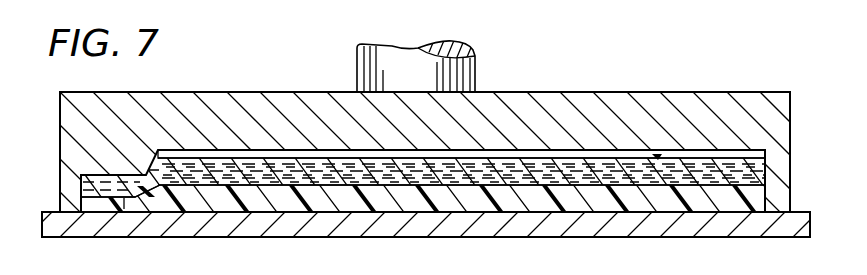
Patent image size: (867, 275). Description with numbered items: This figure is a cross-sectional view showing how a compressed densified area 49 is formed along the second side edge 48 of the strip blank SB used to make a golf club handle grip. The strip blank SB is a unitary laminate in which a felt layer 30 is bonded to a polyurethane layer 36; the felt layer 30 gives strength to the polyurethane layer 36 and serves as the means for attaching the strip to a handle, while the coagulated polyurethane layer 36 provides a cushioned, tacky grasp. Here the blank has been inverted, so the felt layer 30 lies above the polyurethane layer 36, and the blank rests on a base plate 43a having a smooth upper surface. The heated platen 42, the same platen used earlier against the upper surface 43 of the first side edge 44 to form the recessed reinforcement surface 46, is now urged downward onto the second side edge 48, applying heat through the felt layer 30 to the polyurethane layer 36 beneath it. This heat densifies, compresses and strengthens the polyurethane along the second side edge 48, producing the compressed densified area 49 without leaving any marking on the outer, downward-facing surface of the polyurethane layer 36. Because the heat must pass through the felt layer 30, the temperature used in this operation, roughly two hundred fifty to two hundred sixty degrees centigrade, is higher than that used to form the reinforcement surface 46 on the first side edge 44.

The felt layer 30 is at (771, 170).
The polyurethane layer 36 is at (652, 202).
The heated platen 42 is at (568, 98).
The upper surface 43 is at (430, 217).
The base plate 43a is at (705, 228).
The first side edge 44 is at (753, 167).
The recessed reinforcement surface 46 is at (740, 203).
The second side edge 48 is at (82, 196).
The compressed densified area 49 is at (106, 213).
The strip blank SB is at (657, 160).